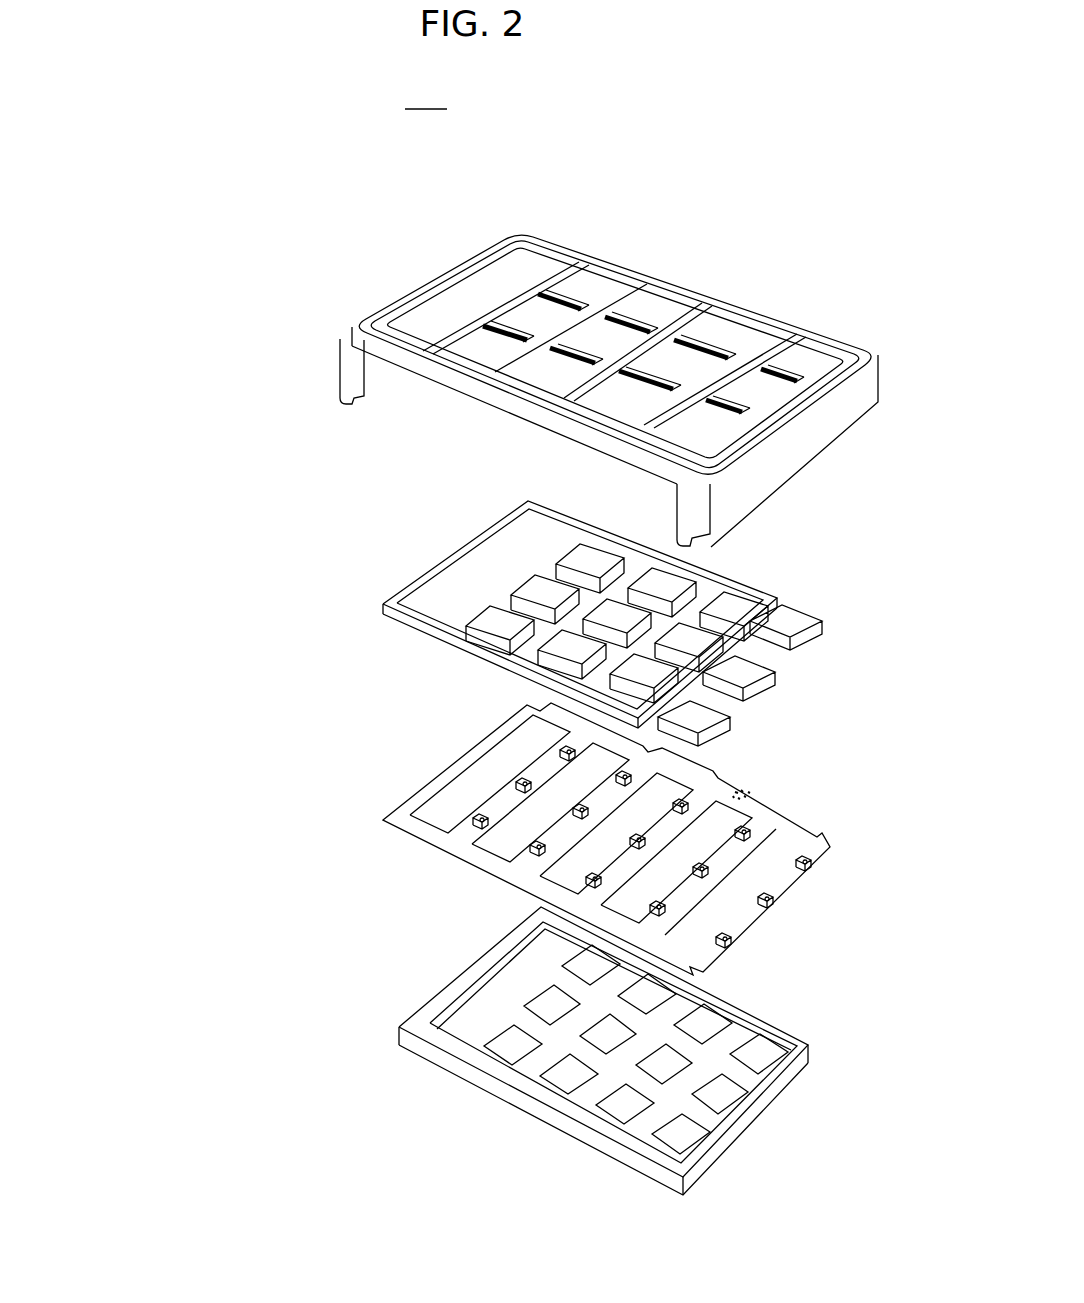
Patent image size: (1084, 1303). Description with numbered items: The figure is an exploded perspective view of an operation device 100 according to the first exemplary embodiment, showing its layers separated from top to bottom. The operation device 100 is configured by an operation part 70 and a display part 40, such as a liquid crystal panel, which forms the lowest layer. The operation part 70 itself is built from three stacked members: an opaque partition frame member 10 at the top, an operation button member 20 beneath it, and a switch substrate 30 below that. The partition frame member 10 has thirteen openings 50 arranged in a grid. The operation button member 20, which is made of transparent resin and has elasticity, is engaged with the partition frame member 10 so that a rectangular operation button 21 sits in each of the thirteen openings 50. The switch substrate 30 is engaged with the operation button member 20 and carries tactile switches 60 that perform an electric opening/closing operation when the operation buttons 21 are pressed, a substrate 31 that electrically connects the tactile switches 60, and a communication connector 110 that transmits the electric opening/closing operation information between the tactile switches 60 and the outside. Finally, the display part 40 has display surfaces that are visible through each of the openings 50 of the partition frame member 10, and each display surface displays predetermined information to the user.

The operation device 100 is at (486, 640).
The operation part 70 is at (486, 692).
The partition frame member 10 is at (519, 370).
The openings 50 is at (515, 263).
The operation button member 20 is at (503, 619).
The operation button 21 is at (600, 550).
The switch substrate 30 is at (537, 847).
The substrate 31 is at (702, 962).
The tactile switches 60 is at (567, 750).
The communication connector 110 is at (740, 795).
The display part 40 is at (767, 1098).